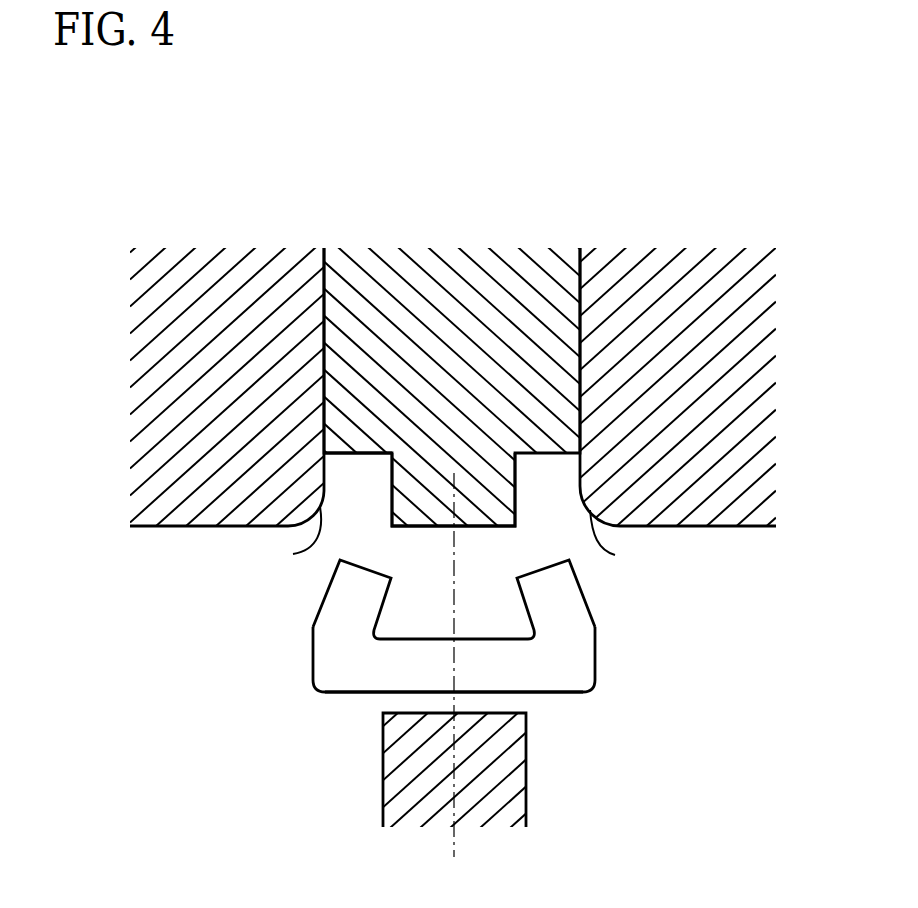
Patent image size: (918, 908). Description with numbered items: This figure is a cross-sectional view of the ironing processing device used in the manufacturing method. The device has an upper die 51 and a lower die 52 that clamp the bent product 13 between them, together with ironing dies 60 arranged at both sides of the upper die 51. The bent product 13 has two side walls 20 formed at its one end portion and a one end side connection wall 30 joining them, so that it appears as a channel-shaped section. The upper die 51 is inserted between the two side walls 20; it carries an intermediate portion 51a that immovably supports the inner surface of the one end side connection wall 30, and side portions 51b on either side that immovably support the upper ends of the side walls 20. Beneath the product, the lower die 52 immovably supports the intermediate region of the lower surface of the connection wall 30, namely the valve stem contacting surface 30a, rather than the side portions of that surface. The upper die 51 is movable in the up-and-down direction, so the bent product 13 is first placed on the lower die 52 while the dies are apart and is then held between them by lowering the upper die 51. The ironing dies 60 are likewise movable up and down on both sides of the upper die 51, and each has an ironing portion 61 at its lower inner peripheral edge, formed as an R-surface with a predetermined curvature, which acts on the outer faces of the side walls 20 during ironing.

The bent product 13 is at (487, 666).
The side walls 20 is at (347, 617).
The one end side connection wall 30 is at (402, 670).
The valve stem contacting surface 30a is at (512, 693).
The upper die 51 is at (438, 295).
The intermediate portion 51a is at (467, 507).
The side portions 51b is at (358, 440).
The lower die 52 is at (492, 803).
The ironing dies 60 is at (198, 295).
The ironing portion 61 is at (293, 554).